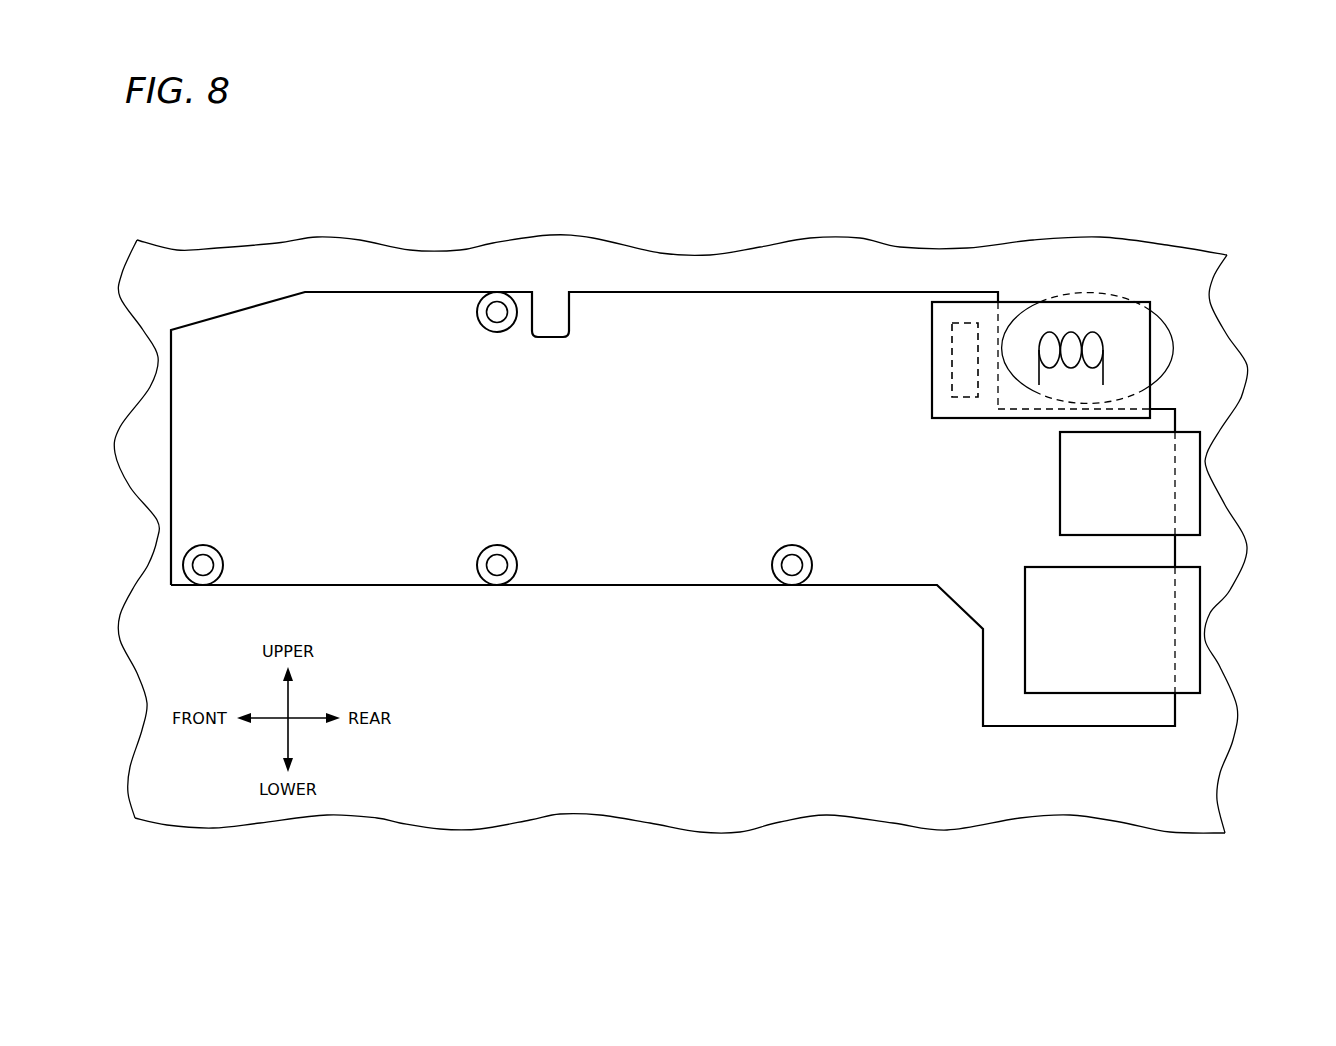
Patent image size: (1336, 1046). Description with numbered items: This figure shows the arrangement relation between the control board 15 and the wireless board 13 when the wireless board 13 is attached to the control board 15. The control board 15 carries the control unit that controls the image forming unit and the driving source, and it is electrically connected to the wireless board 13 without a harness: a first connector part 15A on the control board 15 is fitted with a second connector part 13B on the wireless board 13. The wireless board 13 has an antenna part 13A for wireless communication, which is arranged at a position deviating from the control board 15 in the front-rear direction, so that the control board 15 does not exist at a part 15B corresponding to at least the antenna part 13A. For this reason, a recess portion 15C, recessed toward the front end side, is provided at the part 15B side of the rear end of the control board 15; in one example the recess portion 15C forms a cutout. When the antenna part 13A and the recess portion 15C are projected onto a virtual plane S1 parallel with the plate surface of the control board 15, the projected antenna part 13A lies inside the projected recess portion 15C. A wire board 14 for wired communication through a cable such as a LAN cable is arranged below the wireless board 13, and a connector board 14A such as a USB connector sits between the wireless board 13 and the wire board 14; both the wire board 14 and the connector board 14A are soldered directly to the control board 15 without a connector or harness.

The control board 15 is at (730, 290).
The first connector part 15A is at (1005, 306).
The part corresponding to the antenna part 15B is at (1173, 352).
The recess portion 15C is at (1155, 408).
The wireless board 13 is at (1080, 296).
The antenna part 13A is at (1103, 355).
The second connector part 13B is at (967, 323).
The wire board 14 is at (1200, 630).
The connector board 14A is at (1200, 482).
The virtual plane S1 is at (1197, 773).